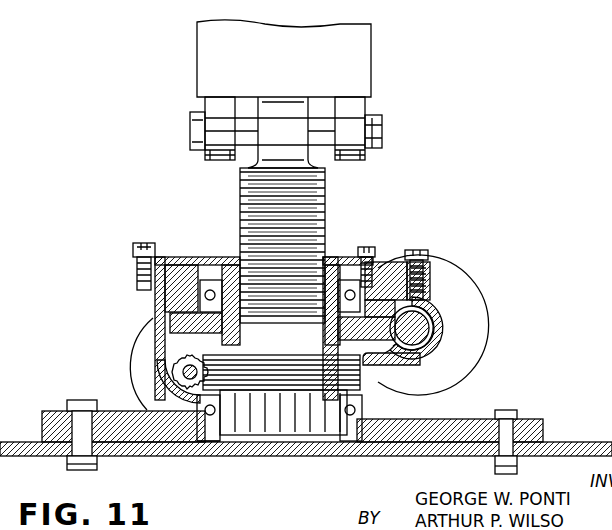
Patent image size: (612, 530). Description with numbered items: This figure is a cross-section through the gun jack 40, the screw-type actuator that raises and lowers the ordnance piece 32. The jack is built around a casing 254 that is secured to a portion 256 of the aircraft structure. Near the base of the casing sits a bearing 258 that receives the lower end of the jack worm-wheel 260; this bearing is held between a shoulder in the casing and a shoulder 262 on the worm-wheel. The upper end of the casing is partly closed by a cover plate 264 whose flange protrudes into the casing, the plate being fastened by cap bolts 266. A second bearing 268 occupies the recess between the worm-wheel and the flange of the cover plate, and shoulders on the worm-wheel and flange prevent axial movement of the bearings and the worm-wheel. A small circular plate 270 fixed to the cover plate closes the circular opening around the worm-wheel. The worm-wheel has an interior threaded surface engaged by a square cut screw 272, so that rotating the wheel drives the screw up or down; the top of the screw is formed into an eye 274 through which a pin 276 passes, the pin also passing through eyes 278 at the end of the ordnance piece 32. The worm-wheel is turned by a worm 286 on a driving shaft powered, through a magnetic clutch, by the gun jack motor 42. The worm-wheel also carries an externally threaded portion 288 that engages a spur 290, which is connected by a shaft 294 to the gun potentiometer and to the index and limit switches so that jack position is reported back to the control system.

The ordnance piece 32 is at (363, 71).
The gun jack 40 is at (460, 155).
The gun jack motor 42 is at (466, 276).
The casing 254 is at (155, 311).
The portion of the aircraft structure 256 is at (557, 453).
The bearing 258 is at (170, 398).
The worm-wheel 260 is at (410, 358).
The shoulder 262 is at (205, 457).
The cover plate 264 is at (394, 259).
The cap bolts 266 is at (133, 251).
The bearing 268 is at (424, 300).
The small circular plate 270 is at (333, 257).
The square cut screw 272 is at (326, 214).
The eye 274 is at (265, 153).
The pin 276 is at (320, 152).
The eyes 278 is at (215, 152).
The worm 286 is at (430, 327).
The externally threaded portion 288 is at (362, 388).
The spur 290 is at (168, 371).
The shaft 294 is at (150, 357).